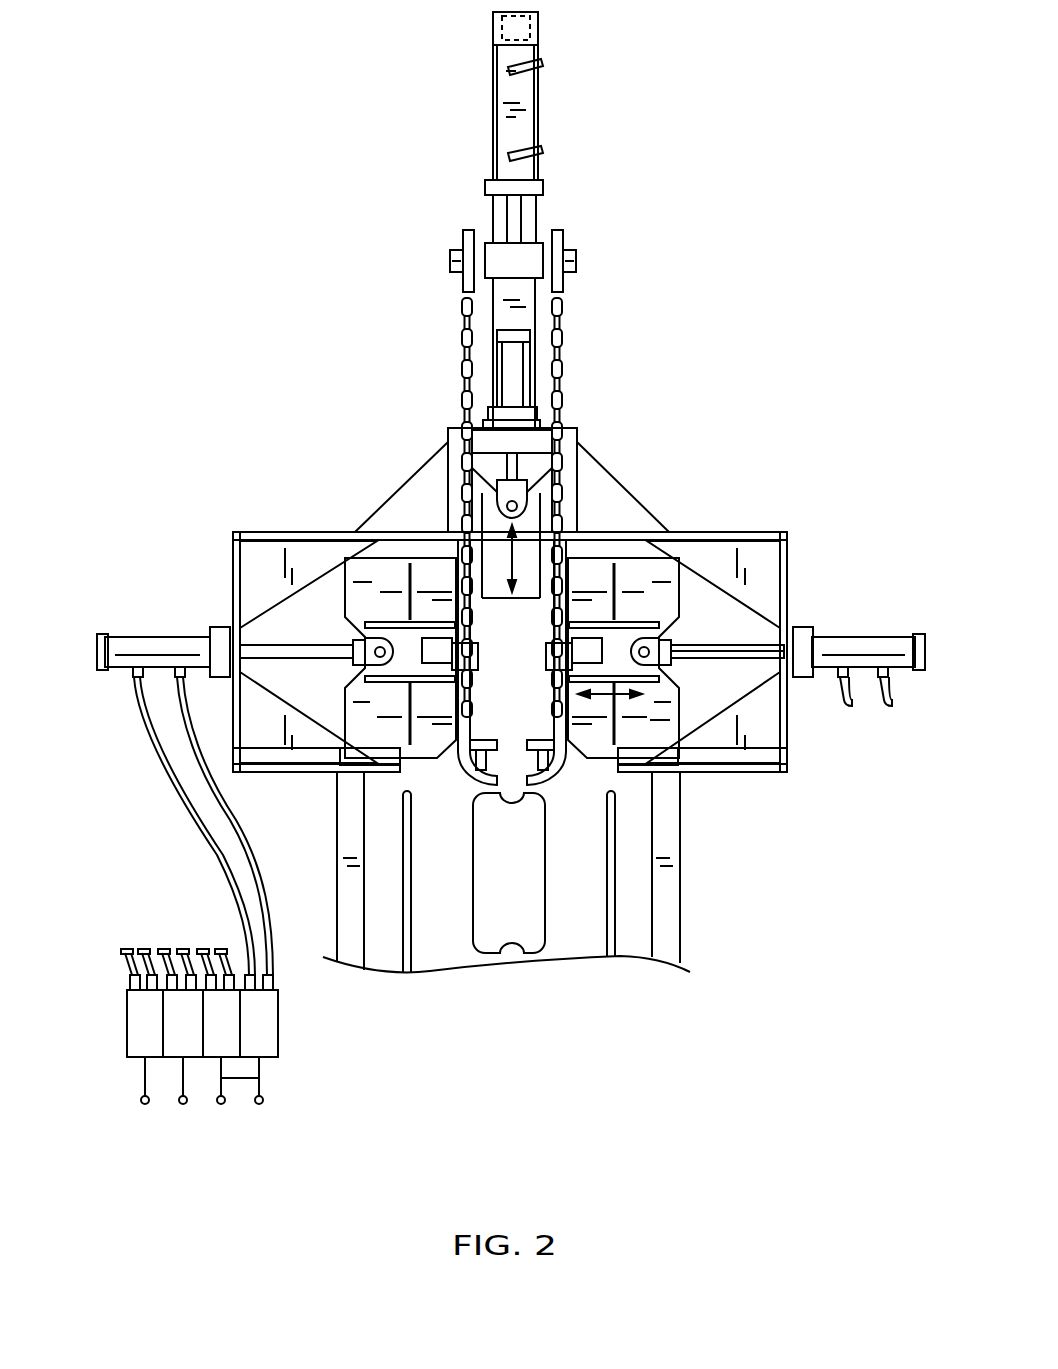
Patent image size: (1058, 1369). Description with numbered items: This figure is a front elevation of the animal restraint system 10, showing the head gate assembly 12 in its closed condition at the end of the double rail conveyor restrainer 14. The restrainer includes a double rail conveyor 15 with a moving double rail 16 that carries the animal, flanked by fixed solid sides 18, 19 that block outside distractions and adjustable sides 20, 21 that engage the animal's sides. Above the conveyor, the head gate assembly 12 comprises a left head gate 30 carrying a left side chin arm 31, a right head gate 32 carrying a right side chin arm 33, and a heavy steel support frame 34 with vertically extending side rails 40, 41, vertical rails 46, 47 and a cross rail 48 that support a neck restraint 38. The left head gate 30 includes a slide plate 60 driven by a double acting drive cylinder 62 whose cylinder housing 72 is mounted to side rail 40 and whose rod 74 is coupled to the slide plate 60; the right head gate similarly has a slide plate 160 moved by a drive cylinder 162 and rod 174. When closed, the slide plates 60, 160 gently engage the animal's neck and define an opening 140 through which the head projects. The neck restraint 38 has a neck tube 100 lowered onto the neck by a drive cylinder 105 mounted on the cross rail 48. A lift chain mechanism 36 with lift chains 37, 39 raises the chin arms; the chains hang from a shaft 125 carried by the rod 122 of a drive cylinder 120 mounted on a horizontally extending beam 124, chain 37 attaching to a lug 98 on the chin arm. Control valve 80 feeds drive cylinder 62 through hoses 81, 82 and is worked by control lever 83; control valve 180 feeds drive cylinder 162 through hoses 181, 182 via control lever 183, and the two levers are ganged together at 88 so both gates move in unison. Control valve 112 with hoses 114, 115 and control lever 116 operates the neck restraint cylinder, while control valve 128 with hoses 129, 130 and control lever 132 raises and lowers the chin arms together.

The animal restraint system 10 is at (291, 453).
The head gate assembly 12 is at (713, 497).
The double rail conveyor restrainer 14 is at (690, 868).
The double rail conveyor 15 is at (519, 876).
The moving double rail 16 is at (547, 806).
The fixed solid side 18 is at (663, 927).
The fixed solid side 19 is at (345, 945).
The adjustable side 20 is at (617, 943).
The adjustable side 21 is at (410, 930).
The left head gate 30 is at (390, 783).
The left side chin arm 31 is at (458, 750).
The right head gate 32 is at (660, 724).
The right side chin arm 33 is at (565, 750).
The support frame 34 is at (758, 530).
The lift chain mechanism 36 is at (412, 255).
The lift chain 37 is at (462, 345).
The neck restraint 38 is at (655, 478).
The lift chain 39 is at (563, 346).
The side rail 40 is at (244, 553).
The side rail 41 is at (790, 550).
The vertical rail 46 is at (456, 447).
The vertical rail 47 is at (571, 447).
The cross rail 48 is at (528, 440).
The slide plate 60 is at (350, 708).
The drive cylinder 62 is at (148, 636).
The cylinder housing 72 is at (214, 636).
The rod 74 is at (288, 648).
The control valve 80 is at (275, 1043).
The hose 81 is at (275, 965).
The hose 82 is at (140, 700).
The control lever 83 is at (262, 1088).
The ganging of control levers 88 is at (240, 1103).
The lug 98 is at (476, 712).
The neck tube 100 is at (522, 596).
The drive cylinder 105 is at (520, 360).
The control valve 112 is at (170, 1060).
The hose 114 is at (163, 955).
The hose 115 is at (193, 955).
The control lever 116 is at (183, 1098).
The drive cylinder 120 is at (508, 122).
The rod 122 is at (515, 225).
The horizontally extending beam 124 is at (540, 25).
The shaft 125 is at (530, 260).
The control valve 128 is at (130, 1030).
The hose 129 is at (541, 150).
The hose 130 is at (541, 68).
The control lever 132 is at (142, 1088).
The opening 140 is at (533, 676).
The slide plate 160 is at (665, 608).
The drive cylinder 162 is at (862, 636).
The rod 174 is at (733, 660).
The control valve 180 is at (212, 1060).
The hose 181 is at (844, 702).
The hose 182 is at (893, 702).
The control lever 183 is at (212, 1103).